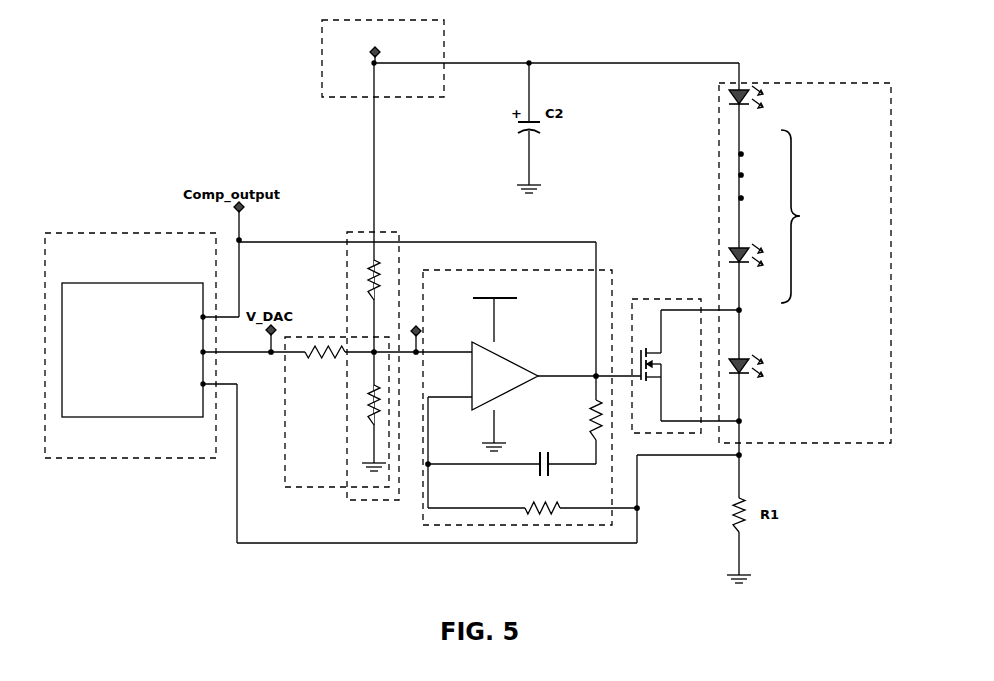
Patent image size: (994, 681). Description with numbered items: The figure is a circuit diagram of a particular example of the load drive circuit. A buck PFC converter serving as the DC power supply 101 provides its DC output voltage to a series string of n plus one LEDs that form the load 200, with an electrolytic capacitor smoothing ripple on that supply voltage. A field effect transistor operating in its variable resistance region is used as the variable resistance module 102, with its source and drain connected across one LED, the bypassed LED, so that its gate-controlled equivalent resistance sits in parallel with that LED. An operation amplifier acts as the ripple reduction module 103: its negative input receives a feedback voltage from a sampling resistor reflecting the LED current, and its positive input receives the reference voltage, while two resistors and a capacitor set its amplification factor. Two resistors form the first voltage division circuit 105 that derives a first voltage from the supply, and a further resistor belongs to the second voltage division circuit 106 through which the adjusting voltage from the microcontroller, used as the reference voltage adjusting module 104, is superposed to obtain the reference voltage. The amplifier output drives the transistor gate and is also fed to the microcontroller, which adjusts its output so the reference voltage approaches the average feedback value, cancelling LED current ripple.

The DC power supply 101 is at (441, 43).
The variable resistance module 102 is at (650, 299).
The ripple reduction module 103 is at (530, 270).
The reference voltage adjusting module 104 is at (60, 238).
The first voltage division circuit 105 is at (395, 228).
The second voltage division circuit 106 is at (280, 465).
The load 200 is at (790, 84).